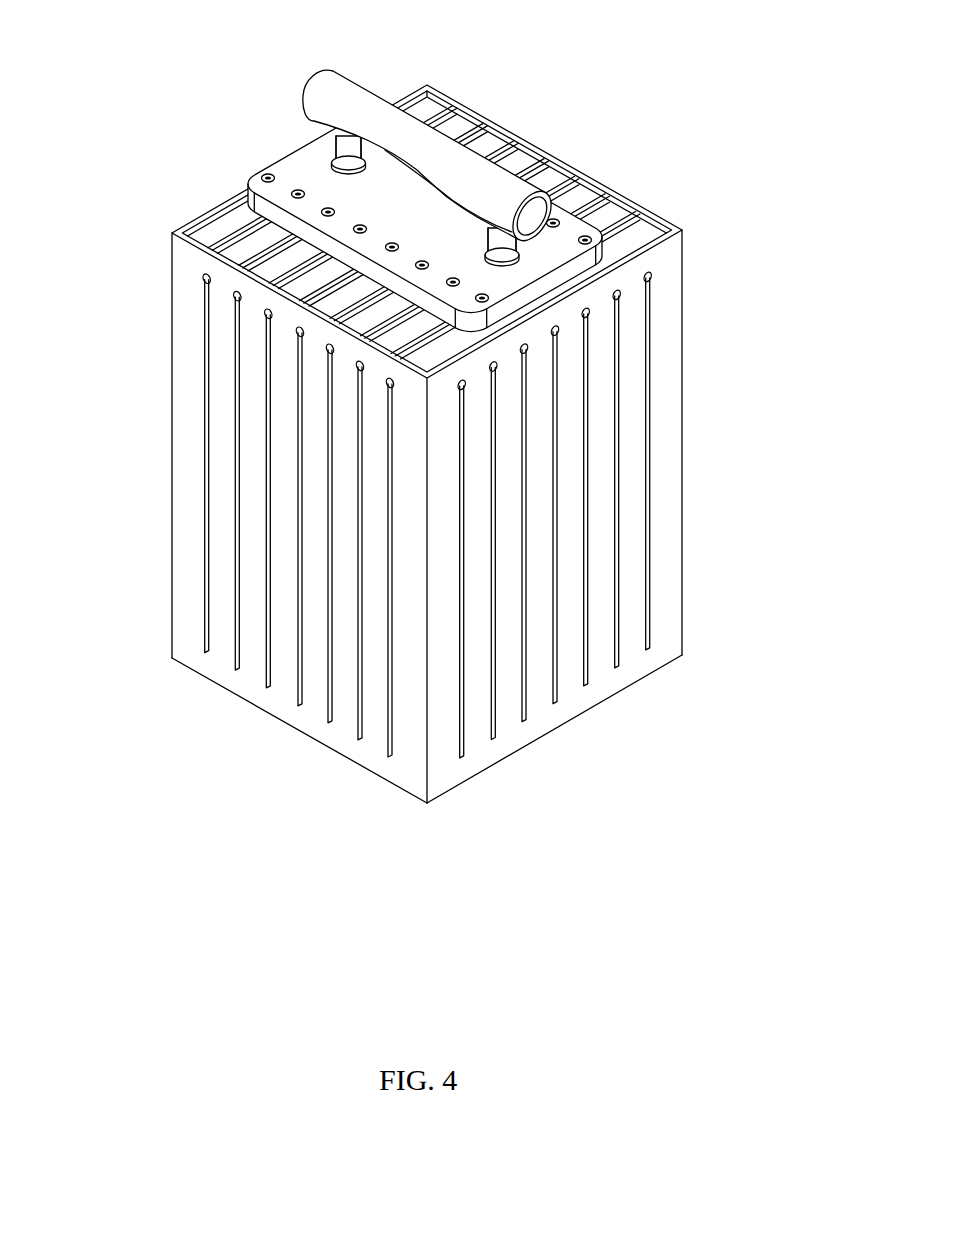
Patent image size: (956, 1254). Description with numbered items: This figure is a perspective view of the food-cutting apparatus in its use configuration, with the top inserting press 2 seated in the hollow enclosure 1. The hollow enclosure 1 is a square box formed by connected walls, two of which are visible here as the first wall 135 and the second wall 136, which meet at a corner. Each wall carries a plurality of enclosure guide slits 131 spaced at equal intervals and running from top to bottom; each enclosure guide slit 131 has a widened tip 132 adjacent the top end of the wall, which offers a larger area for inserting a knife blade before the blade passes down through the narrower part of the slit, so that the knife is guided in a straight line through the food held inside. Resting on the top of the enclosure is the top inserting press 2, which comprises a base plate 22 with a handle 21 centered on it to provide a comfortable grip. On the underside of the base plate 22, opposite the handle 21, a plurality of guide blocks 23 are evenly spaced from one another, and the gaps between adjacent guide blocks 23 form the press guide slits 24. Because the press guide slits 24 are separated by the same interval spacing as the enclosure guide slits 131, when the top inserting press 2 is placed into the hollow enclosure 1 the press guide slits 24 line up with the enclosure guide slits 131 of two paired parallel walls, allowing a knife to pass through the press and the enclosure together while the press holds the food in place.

The hollow enclosure 1 is at (436, 534).
The top inserting press 2 is at (448, 189).
The handle 21 is at (333, 83).
The base plate 22 is at (288, 168).
The guide blocks 23 is at (430, 108).
The press guide slits 24 is at (480, 131).
The enclosure guide slits 131 is at (648, 473).
The widened tip 132 is at (647, 280).
The first wall 135 is at (405, 773).
The second wall 136 is at (673, 650).